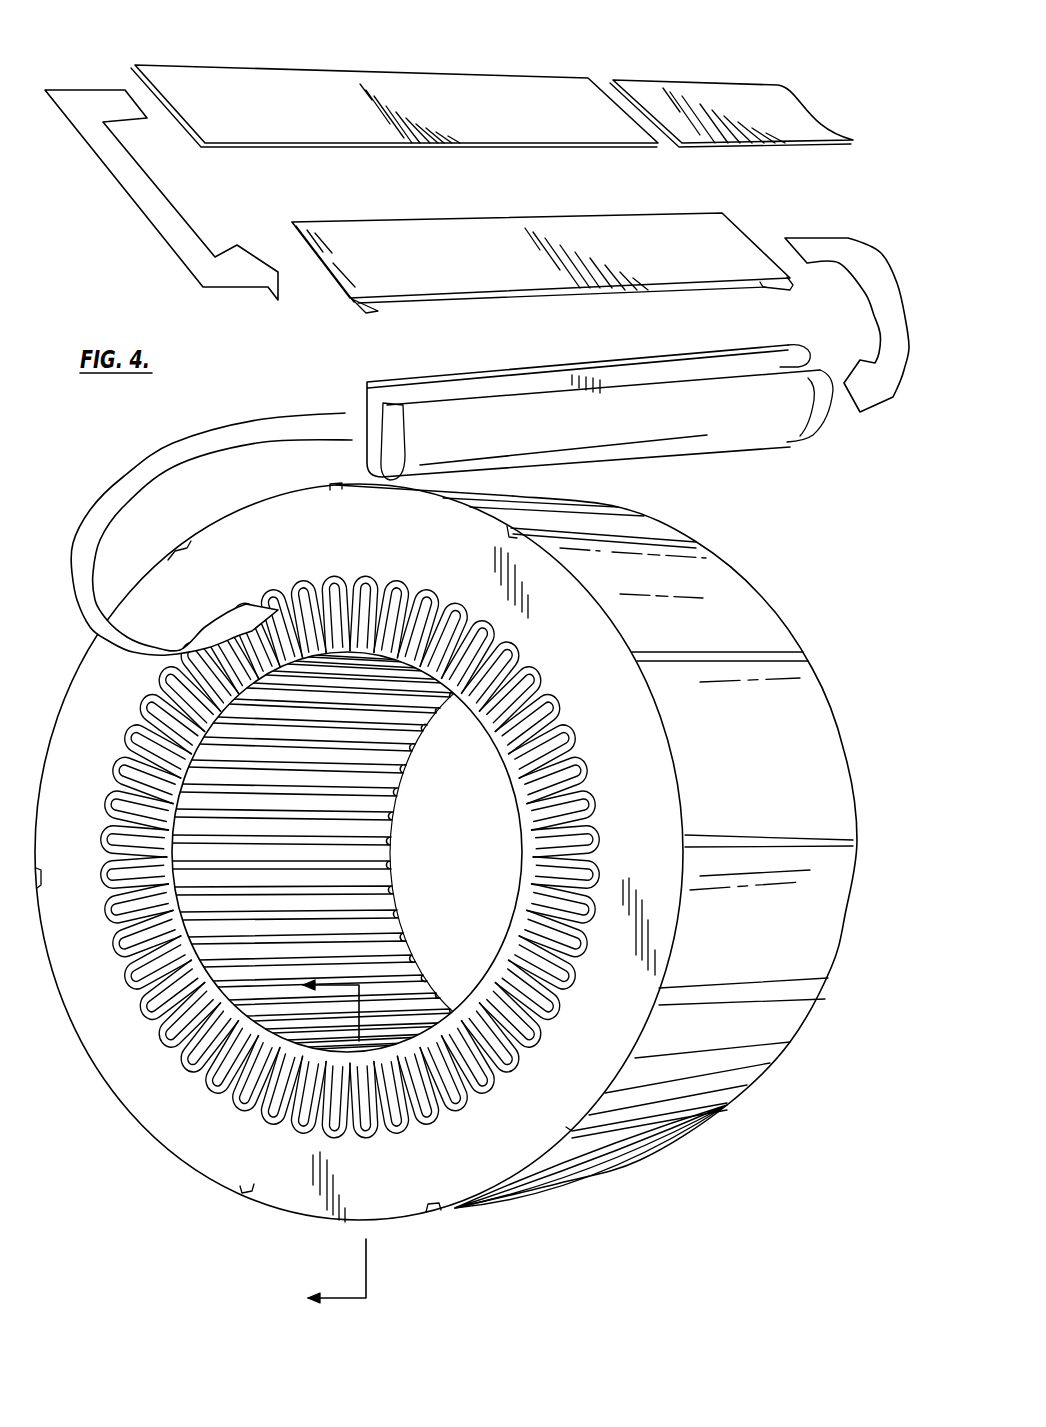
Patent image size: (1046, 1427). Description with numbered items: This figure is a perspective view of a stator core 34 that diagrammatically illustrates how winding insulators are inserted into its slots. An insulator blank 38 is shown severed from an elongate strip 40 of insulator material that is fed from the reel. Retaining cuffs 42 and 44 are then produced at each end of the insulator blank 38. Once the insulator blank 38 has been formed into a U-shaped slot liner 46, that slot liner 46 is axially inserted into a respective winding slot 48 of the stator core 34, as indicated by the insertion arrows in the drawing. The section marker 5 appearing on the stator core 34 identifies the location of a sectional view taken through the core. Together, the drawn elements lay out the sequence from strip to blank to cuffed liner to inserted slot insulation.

The stator core 34 is at (743, 613).
The insulator blank 38 is at (390, 80).
The elongate strip 40 is at (740, 90).
The retaining cuff 42 is at (366, 312).
The retaining cuff 44 is at (783, 290).
The U-shaped slot liner 46 is at (702, 433).
The winding slot 48 is at (276, 607).
The section line 5- 5 is at (323, 1141).